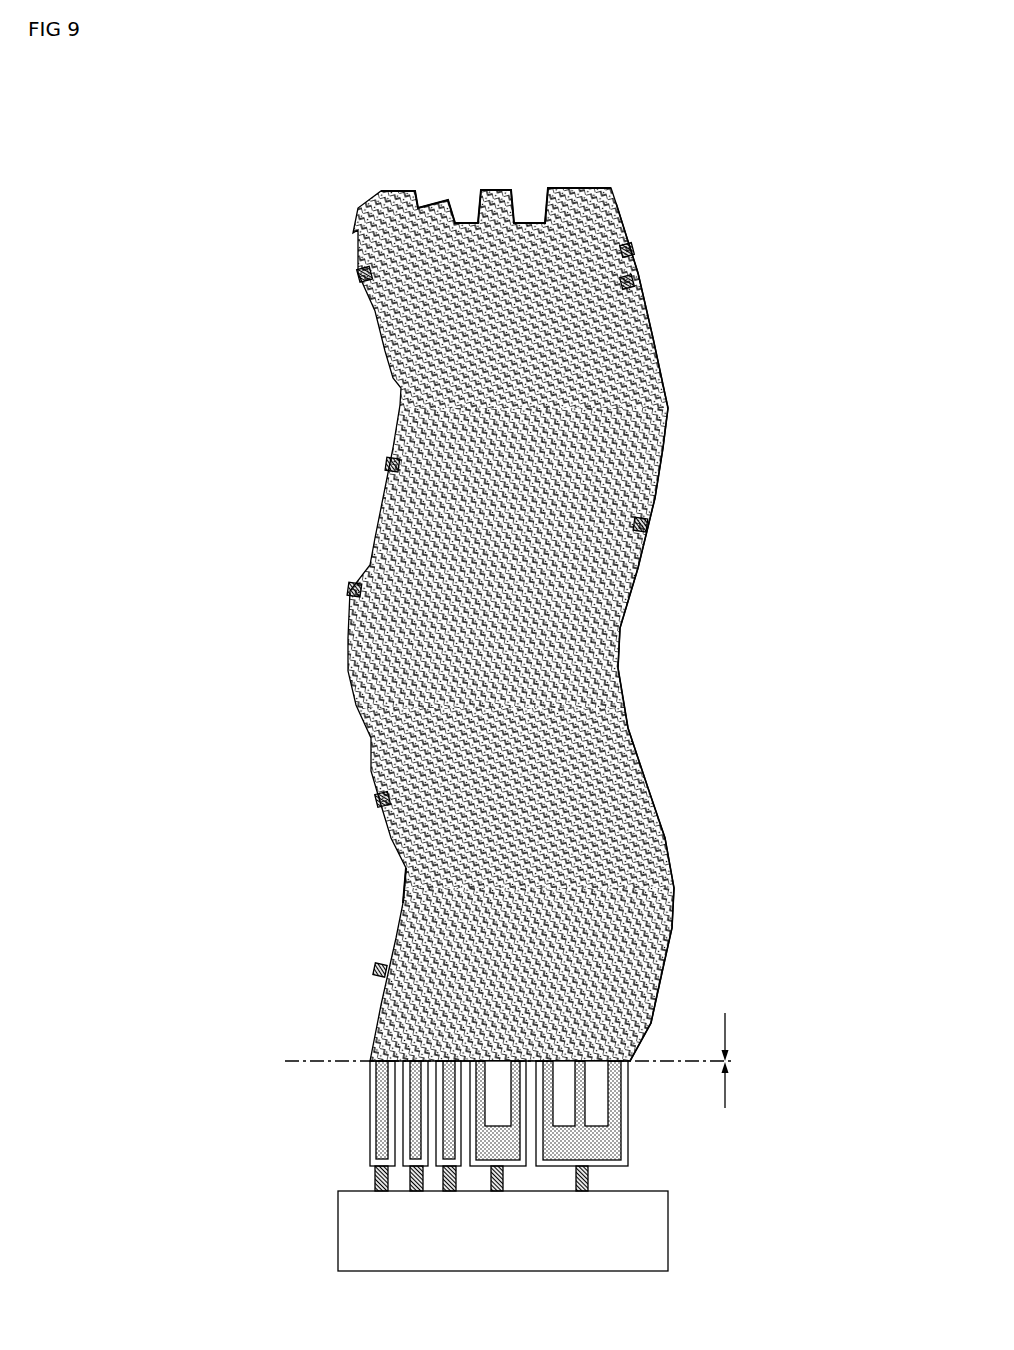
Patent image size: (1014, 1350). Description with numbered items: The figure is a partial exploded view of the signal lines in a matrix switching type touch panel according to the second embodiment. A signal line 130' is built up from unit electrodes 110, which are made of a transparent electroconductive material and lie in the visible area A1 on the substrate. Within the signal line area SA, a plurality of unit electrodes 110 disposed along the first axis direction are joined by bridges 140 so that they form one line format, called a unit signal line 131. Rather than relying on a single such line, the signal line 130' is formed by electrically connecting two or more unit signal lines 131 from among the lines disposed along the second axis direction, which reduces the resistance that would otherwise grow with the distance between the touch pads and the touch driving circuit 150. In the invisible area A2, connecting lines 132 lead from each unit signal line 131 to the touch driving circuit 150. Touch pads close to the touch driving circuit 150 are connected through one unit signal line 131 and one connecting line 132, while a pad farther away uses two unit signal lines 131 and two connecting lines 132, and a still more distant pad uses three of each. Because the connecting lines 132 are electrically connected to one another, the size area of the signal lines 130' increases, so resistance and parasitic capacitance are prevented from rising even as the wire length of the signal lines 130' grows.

The unit electrode 110 is at (383, 181).
The signal line 130' is at (494, 522).
The unit signal line 131 is at (624, 243).
The bridge 140 is at (648, 372).
The signal line area SA is at (382, 460).
The connecting line 132 is at (367, 1100).
The touch driving circuit 150 is at (660, 1233).
The visible area A1 is at (512, 1025).
The invisible area A2 is at (724, 1100).